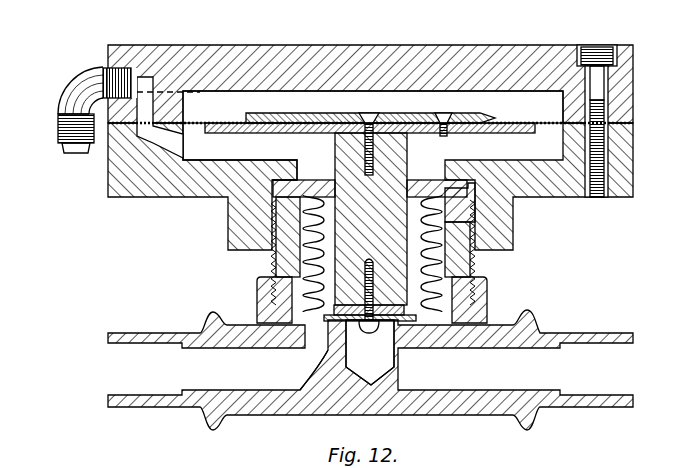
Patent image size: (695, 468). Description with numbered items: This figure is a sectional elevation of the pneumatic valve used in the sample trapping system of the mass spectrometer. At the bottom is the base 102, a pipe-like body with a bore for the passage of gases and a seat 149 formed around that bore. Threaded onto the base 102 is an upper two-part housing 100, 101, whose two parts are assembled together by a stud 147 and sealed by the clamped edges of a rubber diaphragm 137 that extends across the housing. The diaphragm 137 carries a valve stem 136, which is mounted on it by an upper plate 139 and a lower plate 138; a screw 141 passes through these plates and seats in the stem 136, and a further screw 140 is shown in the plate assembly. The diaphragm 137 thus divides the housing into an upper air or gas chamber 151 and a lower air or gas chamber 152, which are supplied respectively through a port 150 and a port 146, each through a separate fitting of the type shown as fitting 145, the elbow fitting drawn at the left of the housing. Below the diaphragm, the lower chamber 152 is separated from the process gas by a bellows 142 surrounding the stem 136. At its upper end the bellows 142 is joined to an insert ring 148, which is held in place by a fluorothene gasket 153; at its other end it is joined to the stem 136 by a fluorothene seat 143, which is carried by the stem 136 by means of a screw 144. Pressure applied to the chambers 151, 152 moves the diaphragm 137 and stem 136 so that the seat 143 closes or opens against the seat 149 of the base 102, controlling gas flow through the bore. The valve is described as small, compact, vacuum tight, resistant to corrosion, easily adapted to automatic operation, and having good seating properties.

The upper housing part 100 is at (633, 82).
The lower housing part 101 is at (633, 156).
The base 102 is at (553, 332).
The valve stem 136 is at (410, 162).
The rubber diaphragm 137 is at (545, 120).
The lower plate 138 is at (500, 133).
The upper plate 139 is at (318, 113).
The screw 140 is at (445, 113).
The screw 141 is at (372, 113).
The bellows 142 is at (292, 283).
The fluorothene seat 143 is at (326, 318).
The screw 144 is at (376, 330).
The fitting 145 is at (103, 76).
The port 146 is at (145, 150).
The stud 147 is at (600, 50).
The insert ring 148 is at (322, 178).
The seat 149 is at (330, 340).
The port 150 is at (183, 85).
The upper air or gas chamber 151 is at (234, 114).
The lower air or gas chamber 152 is at (236, 159).
The fluorothene gasket 153 is at (460, 195).